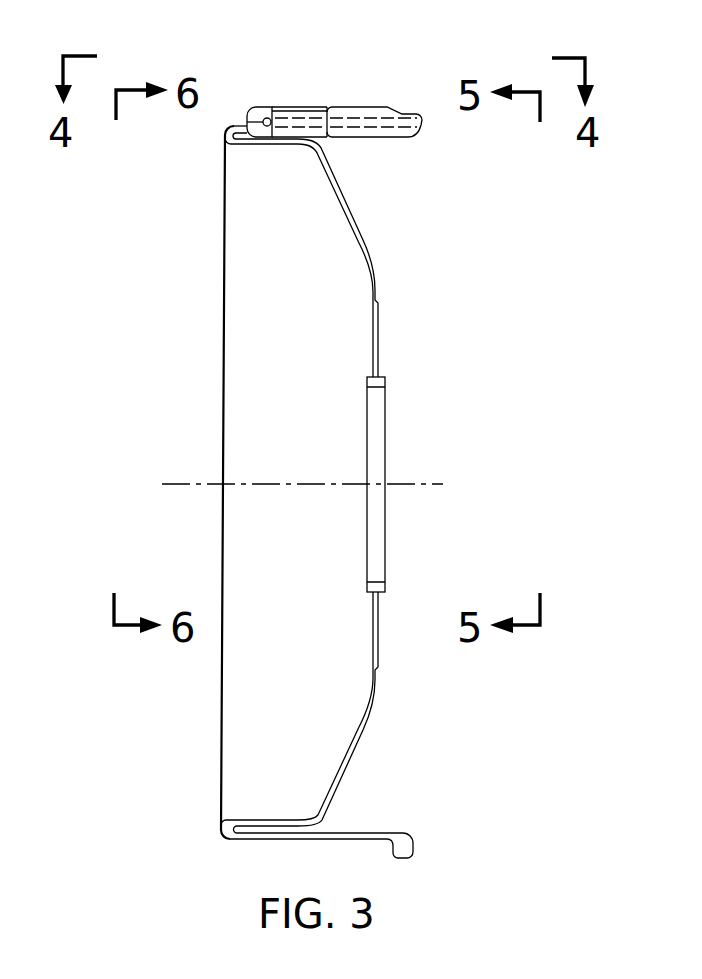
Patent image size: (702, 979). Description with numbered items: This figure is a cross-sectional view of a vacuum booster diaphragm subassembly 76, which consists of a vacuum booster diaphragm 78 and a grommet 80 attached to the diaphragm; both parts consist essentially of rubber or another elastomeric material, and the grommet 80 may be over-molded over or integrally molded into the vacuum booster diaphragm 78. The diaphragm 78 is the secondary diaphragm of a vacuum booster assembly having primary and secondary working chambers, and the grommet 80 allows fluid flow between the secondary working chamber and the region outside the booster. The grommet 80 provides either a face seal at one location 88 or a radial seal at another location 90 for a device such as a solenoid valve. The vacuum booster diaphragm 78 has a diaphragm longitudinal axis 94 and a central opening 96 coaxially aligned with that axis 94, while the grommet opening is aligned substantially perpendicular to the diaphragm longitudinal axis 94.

The booster diaphragm subassembly 76 is at (516, 247).
The vacuum booster diaphragm 78 is at (363, 238).
The grommet 80 is at (361, 96).
The face seal location 88 is at (338, 107).
The radial seal location 90 is at (273, 107).
The diaphragm longitudinal axis 94 is at (168, 484).
The central opening 96 is at (384, 434).